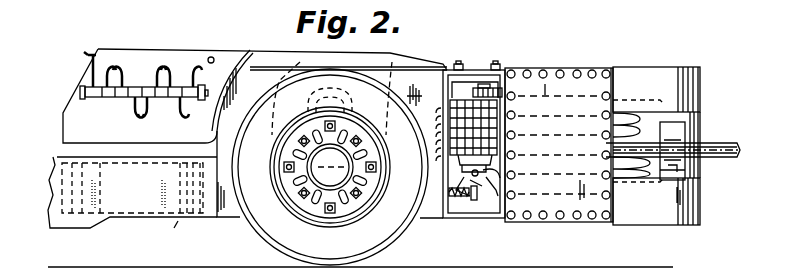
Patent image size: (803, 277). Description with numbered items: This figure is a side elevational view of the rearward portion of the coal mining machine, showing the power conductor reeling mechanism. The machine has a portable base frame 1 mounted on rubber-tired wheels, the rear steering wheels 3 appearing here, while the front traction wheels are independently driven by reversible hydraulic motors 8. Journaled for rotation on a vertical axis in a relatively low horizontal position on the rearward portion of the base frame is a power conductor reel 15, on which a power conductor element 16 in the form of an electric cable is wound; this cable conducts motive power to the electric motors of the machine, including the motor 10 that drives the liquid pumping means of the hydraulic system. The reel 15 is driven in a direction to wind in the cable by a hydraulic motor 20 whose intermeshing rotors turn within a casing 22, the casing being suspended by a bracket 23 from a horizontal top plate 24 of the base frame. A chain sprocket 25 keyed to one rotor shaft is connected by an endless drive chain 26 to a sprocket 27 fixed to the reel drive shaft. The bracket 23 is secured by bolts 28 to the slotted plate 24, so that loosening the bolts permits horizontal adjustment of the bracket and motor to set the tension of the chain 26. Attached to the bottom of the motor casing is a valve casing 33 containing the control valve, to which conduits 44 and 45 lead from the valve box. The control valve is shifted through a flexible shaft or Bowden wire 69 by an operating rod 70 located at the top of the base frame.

The portable base frame 1 is at (148, 218).
The rear steering wheels 3 is at (383, 236).
The reversible hydraulic motors 8 is at (123, 197).
The motor 10 is at (328, 56).
The power conductor reel 15 is at (630, 100).
The power conductor element 16 is at (720, 143).
The hydraulic motor 20 is at (465, 107).
The casing 22 is at (449, 112).
The bracket 23 is at (514, 71).
The horizontal top plate 24 is at (481, 84).
The chain sprocket 25 is at (505, 99).
The endless drive chain 26 is at (483, 90).
The sprocket 27 is at (577, 90).
The bolts 28 is at (455, 62).
The valve casing 33 is at (484, 172).
The conduit 44 is at (457, 197).
The conduit 45 is at (497, 193).
The flexible shaft or Bowden wire 69 is at (466, 200).
The operating rod 70 is at (213, 58).